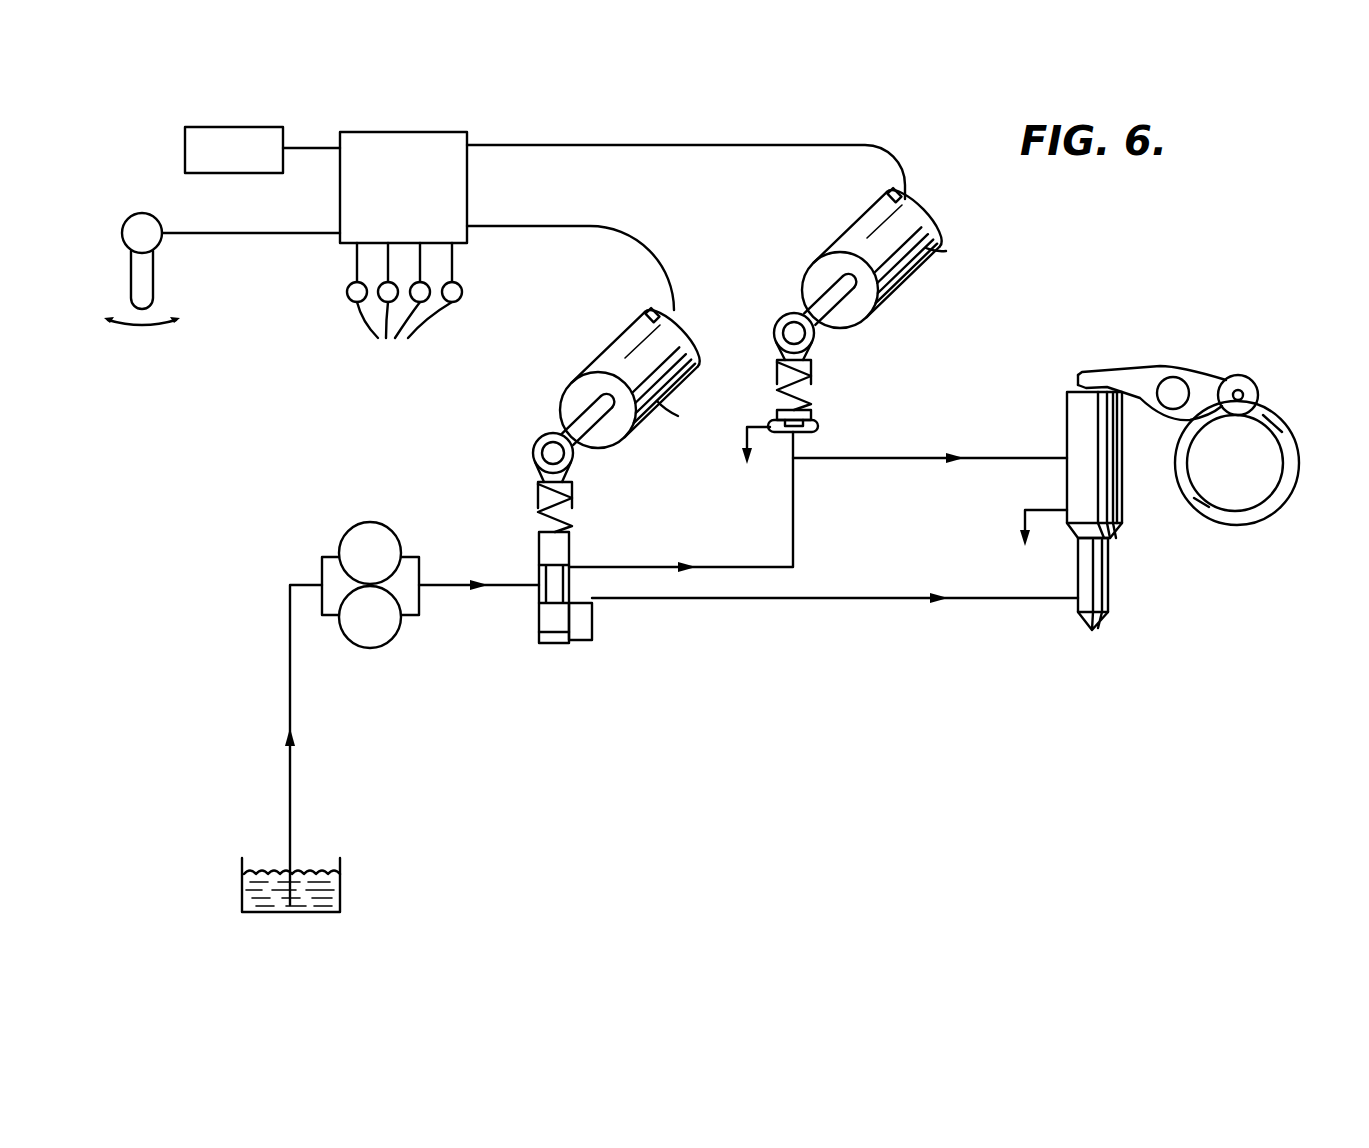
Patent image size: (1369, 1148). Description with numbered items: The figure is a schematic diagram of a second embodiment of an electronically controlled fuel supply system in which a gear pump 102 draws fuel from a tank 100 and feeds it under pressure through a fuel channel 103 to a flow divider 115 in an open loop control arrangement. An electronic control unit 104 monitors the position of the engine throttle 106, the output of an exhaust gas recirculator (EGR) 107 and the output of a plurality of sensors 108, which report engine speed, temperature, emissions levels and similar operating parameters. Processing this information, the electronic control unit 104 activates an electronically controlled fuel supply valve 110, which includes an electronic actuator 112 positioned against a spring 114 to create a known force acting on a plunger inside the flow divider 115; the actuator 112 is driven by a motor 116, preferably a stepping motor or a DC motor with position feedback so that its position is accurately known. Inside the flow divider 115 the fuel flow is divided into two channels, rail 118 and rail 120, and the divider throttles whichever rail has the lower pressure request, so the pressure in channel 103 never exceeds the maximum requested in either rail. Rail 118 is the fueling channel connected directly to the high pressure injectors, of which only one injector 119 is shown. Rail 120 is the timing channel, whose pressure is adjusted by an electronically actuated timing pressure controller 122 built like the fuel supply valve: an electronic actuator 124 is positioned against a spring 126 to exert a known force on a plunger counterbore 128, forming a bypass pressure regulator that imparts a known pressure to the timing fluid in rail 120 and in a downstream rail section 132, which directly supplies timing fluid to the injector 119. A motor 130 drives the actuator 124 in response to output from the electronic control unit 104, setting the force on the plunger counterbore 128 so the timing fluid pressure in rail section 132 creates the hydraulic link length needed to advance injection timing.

The fuel tank 100 is at (345, 871).
The gear pump 102 is at (356, 526).
The fuel channel 103 is at (463, 588).
The electronic control unit 104 is at (406, 134).
The engine throttle 106 is at (136, 213).
The exhaust gas recirculator 107 is at (234, 128).
The sensors 108 is at (397, 307).
The fuel supply valve 110 is at (512, 511).
The electronic actuator 112 is at (537, 439).
The spring 114 is at (573, 517).
The flow divider 115 is at (570, 551).
The motor 116 is at (624, 334).
The rail 118 is at (760, 600).
The injector 119 is at (1122, 577).
The rail 120 is at (793, 526).
The timing pressure controller 122 is at (880, 339).
The electronic actuator 124 is at (778, 321).
The spring 126 is at (813, 392).
The plunger counterbore 128 is at (806, 432).
The motor 130 is at (860, 213).
The rail section 132 is at (937, 458).